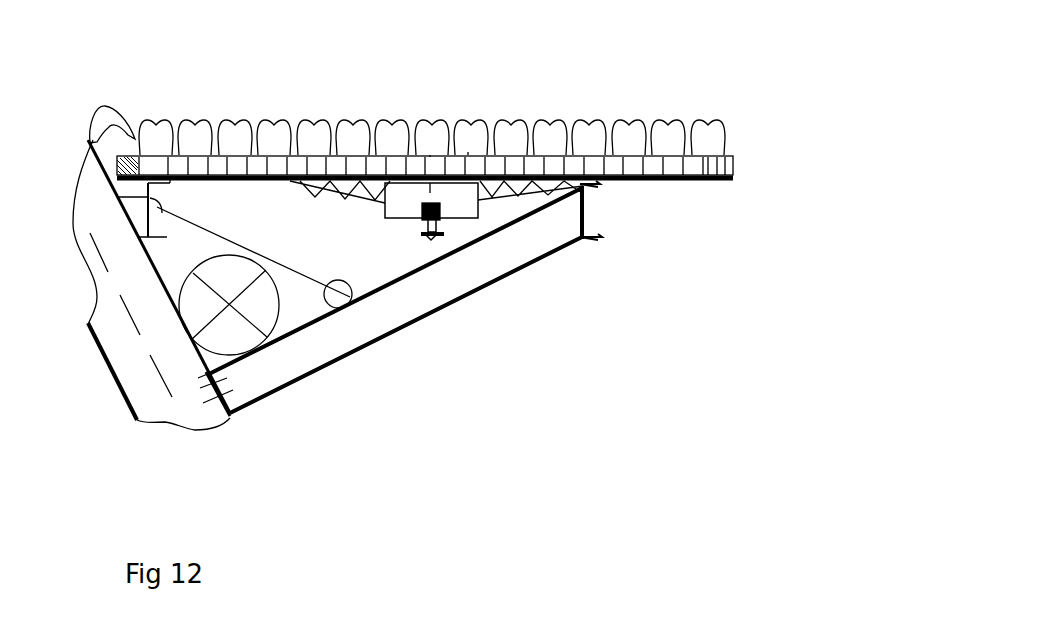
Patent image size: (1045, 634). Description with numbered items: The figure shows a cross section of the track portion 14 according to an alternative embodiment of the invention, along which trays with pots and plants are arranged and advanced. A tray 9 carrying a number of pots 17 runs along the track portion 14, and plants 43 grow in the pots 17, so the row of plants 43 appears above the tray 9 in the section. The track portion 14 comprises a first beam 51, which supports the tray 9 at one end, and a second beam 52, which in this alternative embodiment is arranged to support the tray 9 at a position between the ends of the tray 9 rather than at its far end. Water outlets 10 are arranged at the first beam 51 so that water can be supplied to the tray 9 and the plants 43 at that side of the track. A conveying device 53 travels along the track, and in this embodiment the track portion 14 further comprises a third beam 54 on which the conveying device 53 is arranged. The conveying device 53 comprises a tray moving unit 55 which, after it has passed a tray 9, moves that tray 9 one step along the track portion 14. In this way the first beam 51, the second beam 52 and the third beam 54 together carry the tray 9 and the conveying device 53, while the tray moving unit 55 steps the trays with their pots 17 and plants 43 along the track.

The tray 9 is at (674, 183).
The water outlets 10 is at (98, 130).
The track portion 14 is at (425, 132).
The pots 17 is at (468, 152).
The plants 43 is at (310, 127).
The first beam 51 is at (157, 237).
The second beam 52 is at (587, 237).
The conveying device 53 is at (395, 207).
The third beam 54 is at (430, 240).
The tray moving unit 55 is at (467, 162).